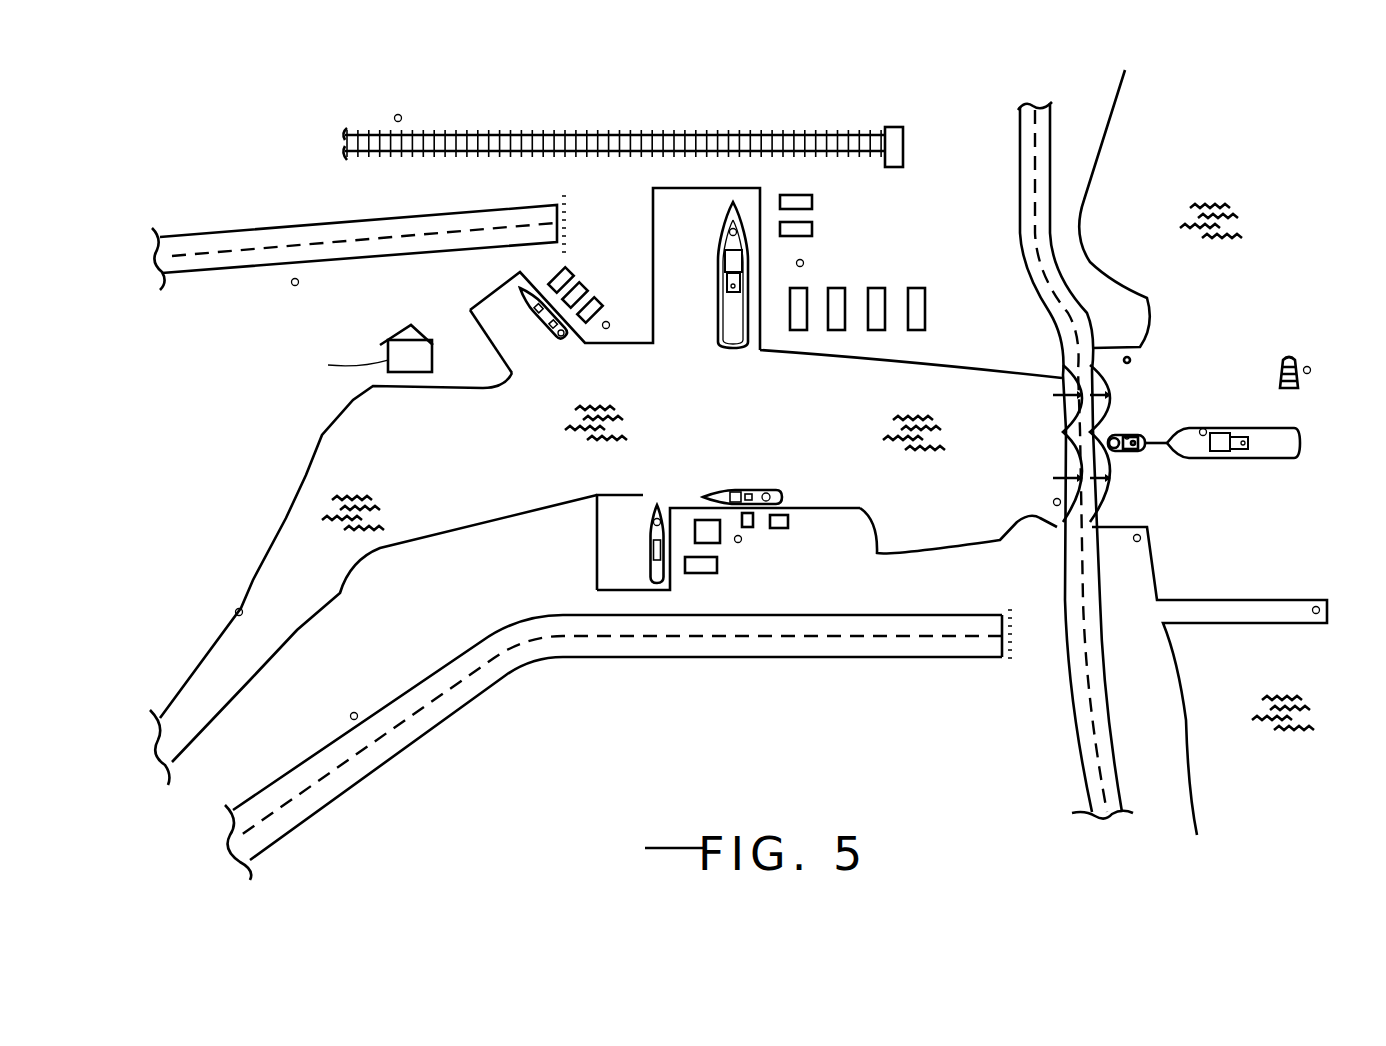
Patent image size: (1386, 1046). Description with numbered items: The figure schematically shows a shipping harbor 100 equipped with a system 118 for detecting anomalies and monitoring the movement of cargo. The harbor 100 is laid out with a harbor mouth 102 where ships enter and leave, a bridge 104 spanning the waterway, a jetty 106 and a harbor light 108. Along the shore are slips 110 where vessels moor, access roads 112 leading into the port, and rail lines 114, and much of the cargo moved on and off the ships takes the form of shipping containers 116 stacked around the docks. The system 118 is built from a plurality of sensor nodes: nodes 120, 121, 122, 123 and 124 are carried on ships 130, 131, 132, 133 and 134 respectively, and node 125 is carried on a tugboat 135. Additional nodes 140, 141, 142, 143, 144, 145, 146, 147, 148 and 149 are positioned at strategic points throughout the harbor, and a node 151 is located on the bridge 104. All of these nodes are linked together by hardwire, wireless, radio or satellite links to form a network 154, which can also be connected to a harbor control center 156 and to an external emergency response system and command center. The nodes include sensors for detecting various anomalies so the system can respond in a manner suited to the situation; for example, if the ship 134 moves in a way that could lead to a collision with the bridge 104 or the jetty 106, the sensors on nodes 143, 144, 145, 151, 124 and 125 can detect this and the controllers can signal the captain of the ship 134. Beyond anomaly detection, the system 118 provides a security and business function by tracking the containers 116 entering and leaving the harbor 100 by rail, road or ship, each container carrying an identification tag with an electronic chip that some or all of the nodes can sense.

The shipping harbor 100 is at (752, 594).
The harbor mouth 102 is at (1126, 507).
The bridge 104 is at (1062, 420).
The jetty 106 is at (1283, 624).
The harbor light 108 is at (1289, 358).
The slips 110 is at (658, 190).
The access roads 112 is at (338, 218).
The rail lines 114 is at (600, 132).
The shipping containers 116 is at (813, 225).
The system for detecting anomalies 118 is at (797, 687).
The node 120 is at (560, 337).
The node 121 is at (767, 493).
The node 122 is at (653, 522).
The node 123 is at (729, 232).
The node 124 is at (1203, 428).
The node 125 is at (1130, 451).
The ship 130 is at (538, 318).
The ship 131 is at (727, 487).
The ship 132 is at (650, 515).
The ship 133 is at (720, 325).
The ship 134 is at (1242, 459).
The tugboat 135 is at (1127, 436).
The node 140 is at (610, 322).
The node 141 is at (804, 263).
The node 142 is at (740, 543).
The node 143 is at (1310, 376).
The node 144 is at (1137, 545).
The node 145 is at (1316, 603).
The node 146 is at (350, 714).
The node 147 is at (394, 112).
The node 148 is at (297, 285).
The node 149 is at (239, 607).
The node 151 is at (1053, 498).
The network 154 is at (985, 683).
The harbor control center 156 is at (398, 333).